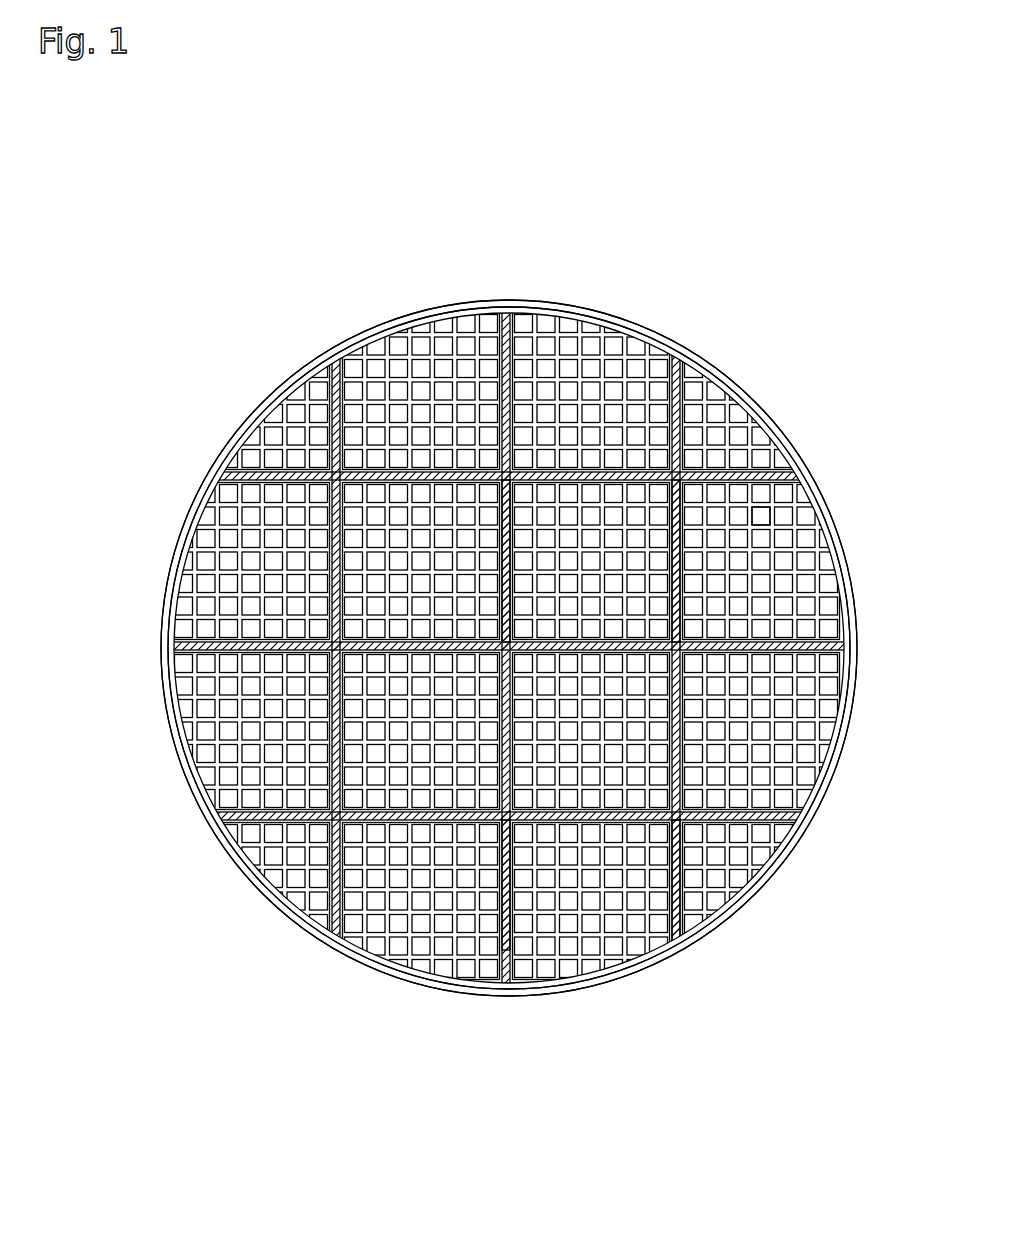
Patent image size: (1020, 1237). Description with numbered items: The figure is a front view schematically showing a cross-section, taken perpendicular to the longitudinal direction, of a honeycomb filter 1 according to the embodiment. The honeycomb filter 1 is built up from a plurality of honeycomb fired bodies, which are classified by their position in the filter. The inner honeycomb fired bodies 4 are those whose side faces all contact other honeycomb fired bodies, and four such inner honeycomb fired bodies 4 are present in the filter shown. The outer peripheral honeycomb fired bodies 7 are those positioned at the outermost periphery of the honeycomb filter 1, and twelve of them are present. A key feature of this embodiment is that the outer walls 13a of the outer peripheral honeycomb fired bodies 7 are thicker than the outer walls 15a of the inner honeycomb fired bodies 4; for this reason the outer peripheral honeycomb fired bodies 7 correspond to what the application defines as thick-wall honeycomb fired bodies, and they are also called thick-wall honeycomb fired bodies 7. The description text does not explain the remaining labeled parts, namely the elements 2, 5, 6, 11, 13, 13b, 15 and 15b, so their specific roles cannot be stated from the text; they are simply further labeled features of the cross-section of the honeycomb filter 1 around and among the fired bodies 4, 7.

The honeycomb filter 1 is at (814, 356).
The outer peripheral coating layer 2 is at (856, 638).
The inner honeycomb fired body 4 is at (501, 669).
The outer peripheral portion 5 is at (346, 950).
The outer peripheral surface 6 is at (276, 906).
The outer peripheral honeycomb fired body 7 is at (391, 354).
The partition wall 11 is at (765, 520).
The bonding layer 13 is at (687, 1053).
The outer wall of outer peripheral honeycomb fired body 13a is at (665, 923).
The second bonding layer portion 13b is at (565, 935).
The bonding layer 15 is at (622, 247).
The outer wall of inner honeycomb fired body 15a is at (500, 513).
The second bonding layer portion 15b is at (565, 502).